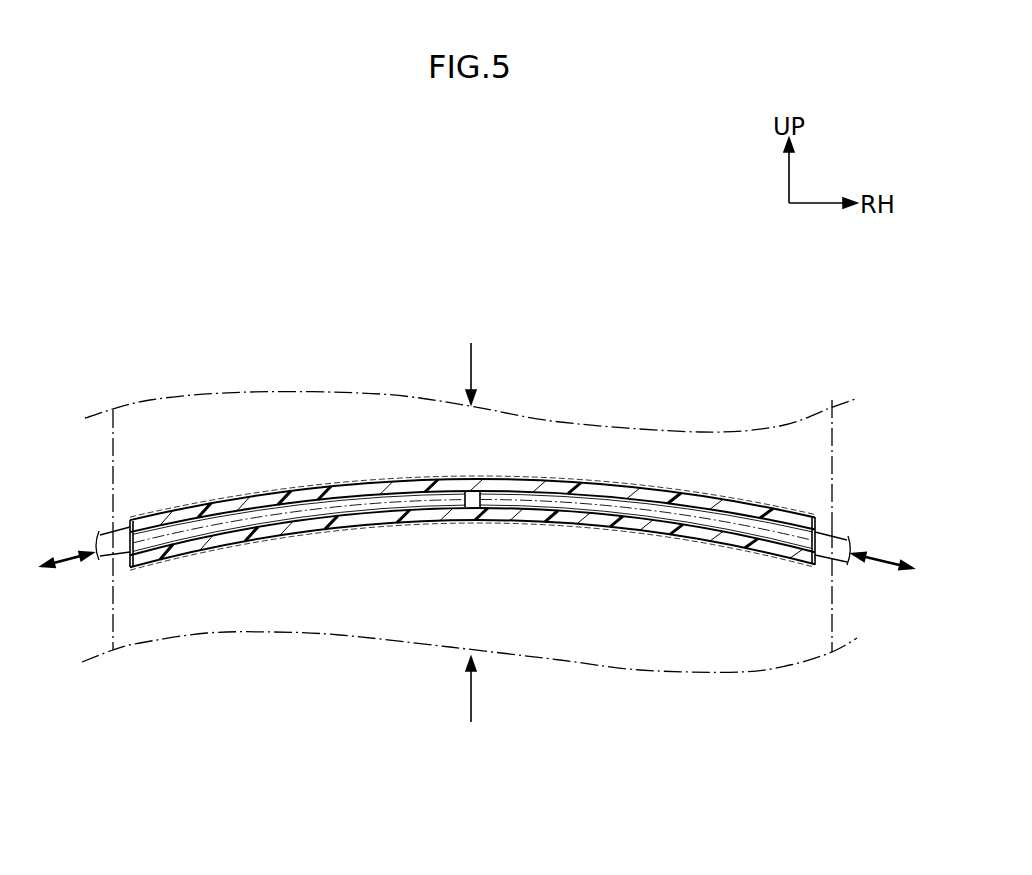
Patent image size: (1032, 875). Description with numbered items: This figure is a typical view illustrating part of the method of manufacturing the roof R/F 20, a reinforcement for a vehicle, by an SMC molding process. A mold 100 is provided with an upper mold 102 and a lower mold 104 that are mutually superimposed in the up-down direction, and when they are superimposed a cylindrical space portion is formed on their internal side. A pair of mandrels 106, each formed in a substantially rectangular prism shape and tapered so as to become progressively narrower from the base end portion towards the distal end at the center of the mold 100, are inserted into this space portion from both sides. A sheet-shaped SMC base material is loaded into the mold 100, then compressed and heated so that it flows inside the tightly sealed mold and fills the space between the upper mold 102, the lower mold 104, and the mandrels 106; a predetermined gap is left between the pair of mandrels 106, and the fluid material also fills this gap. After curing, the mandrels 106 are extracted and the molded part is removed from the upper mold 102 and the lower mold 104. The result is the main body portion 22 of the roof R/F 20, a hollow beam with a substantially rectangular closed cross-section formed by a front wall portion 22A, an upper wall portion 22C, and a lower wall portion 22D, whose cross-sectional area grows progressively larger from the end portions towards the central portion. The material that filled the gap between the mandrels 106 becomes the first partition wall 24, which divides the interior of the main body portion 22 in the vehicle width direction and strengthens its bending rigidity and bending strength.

The roof R/F 20 is at (430, 501).
The main body portion 22 is at (430, 501).
The front wall portion 22A is at (140, 535).
The upper wall portion 22C is at (430, 479).
The lower wall portion 22D is at (443, 507).
The first partition wall 24 is at (487, 496).
The mold 100 is at (479, 564).
The upper mold 102 is at (708, 448).
The lower mold 104 is at (735, 660).
The mandrel 106 is at (848, 537).